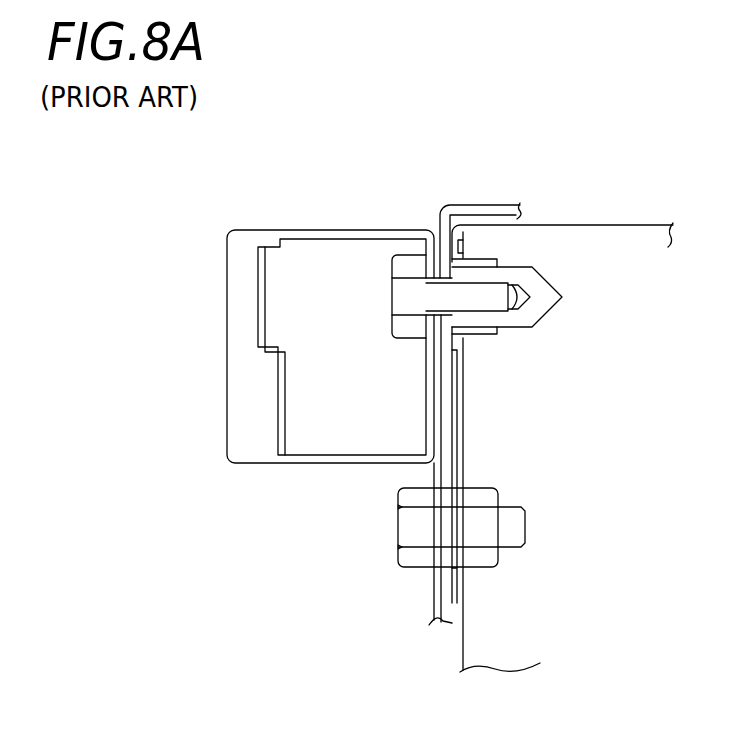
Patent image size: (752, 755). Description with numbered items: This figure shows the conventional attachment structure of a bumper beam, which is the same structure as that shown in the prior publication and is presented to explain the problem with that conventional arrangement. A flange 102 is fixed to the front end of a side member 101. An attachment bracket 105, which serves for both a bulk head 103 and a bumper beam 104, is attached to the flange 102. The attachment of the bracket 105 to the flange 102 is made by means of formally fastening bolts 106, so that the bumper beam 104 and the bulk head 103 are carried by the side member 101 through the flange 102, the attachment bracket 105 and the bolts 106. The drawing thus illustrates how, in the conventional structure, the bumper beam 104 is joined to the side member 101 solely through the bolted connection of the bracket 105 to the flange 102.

The side member 101 is at (608, 224).
The flange 102 is at (465, 431).
The bulk head 103 is at (488, 203).
The bumper beam 104 is at (331, 230).
The attachment bracket 105 is at (432, 590).
The fastening bolts 106 is at (397, 525).